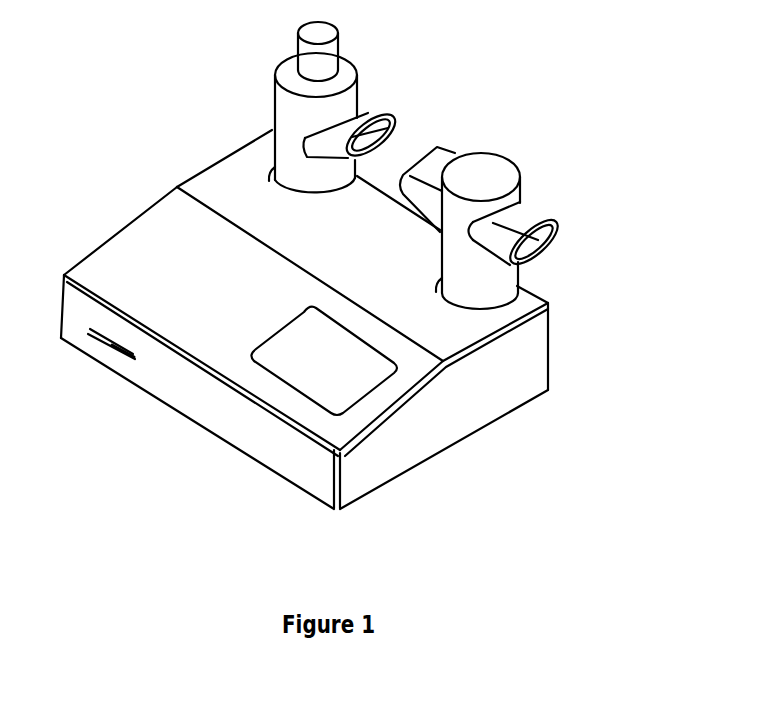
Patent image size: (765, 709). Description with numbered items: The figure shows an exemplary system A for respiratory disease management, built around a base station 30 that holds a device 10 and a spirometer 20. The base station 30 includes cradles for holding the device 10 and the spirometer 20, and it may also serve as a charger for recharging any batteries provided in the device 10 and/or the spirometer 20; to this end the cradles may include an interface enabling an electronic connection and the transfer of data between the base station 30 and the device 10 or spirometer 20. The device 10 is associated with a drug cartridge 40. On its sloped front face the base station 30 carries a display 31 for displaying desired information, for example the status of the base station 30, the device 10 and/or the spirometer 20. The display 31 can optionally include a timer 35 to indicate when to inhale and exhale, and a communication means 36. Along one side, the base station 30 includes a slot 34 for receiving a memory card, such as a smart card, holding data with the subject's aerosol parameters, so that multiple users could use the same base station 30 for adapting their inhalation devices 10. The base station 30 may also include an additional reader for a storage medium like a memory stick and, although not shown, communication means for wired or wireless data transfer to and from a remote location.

The system A is at (130, 92).
The device 10 is at (390, 58).
The spirometer 20 is at (549, 179).
The base station 30 is at (488, 453).
The display 31 is at (327, 383).
The slot for reader 34 is at (103, 344).
The timer 35 is at (262, 358).
The communication means 36 is at (356, 383).
The drug cartridge 40 is at (297, 38).